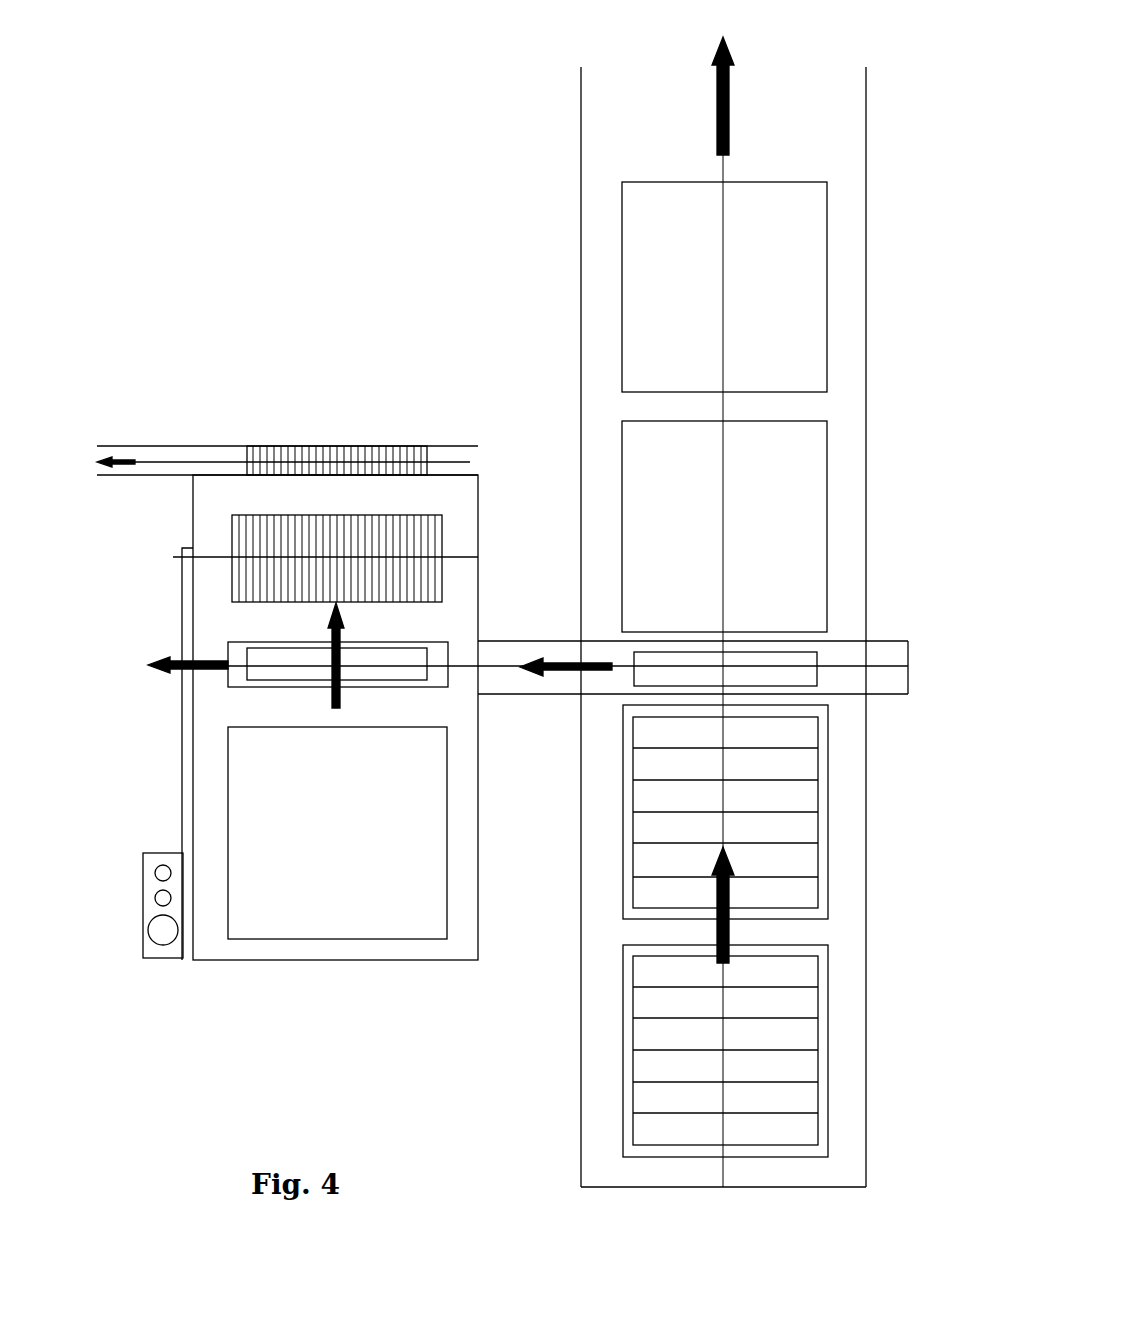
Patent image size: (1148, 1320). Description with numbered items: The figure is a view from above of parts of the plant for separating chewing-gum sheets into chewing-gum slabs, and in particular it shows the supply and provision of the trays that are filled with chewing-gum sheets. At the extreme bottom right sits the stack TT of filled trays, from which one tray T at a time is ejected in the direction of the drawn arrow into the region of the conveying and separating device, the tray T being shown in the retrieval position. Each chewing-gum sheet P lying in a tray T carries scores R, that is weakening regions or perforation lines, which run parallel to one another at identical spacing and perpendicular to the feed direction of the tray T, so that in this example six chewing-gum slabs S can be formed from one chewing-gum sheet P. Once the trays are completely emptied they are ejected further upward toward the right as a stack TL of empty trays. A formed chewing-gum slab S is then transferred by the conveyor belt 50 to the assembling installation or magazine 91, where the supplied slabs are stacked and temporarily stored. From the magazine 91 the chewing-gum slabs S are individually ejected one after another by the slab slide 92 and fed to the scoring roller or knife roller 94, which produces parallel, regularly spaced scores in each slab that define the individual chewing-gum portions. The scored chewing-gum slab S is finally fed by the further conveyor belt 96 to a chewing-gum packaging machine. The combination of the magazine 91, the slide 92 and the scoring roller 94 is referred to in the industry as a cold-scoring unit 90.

The stack of empty trays TL is at (662, 276).
The conveyor belt 50 is at (555, 648).
The chewing-gum slab S is at (307, 452).
The tray T is at (623, 893).
The stack of filled trays TT is at (623, 1120).
The scores R is at (677, 745).
The chewing-gum sheet P is at (675, 822).
The cold-scoring unit 90 is at (358, 970).
The assembling installation (magazine) 91 is at (237, 675).
The slab slide 92 is at (275, 891).
The scoring roller or knife roller 94 is at (282, 543).
The conveyor belt 96 is at (208, 455).